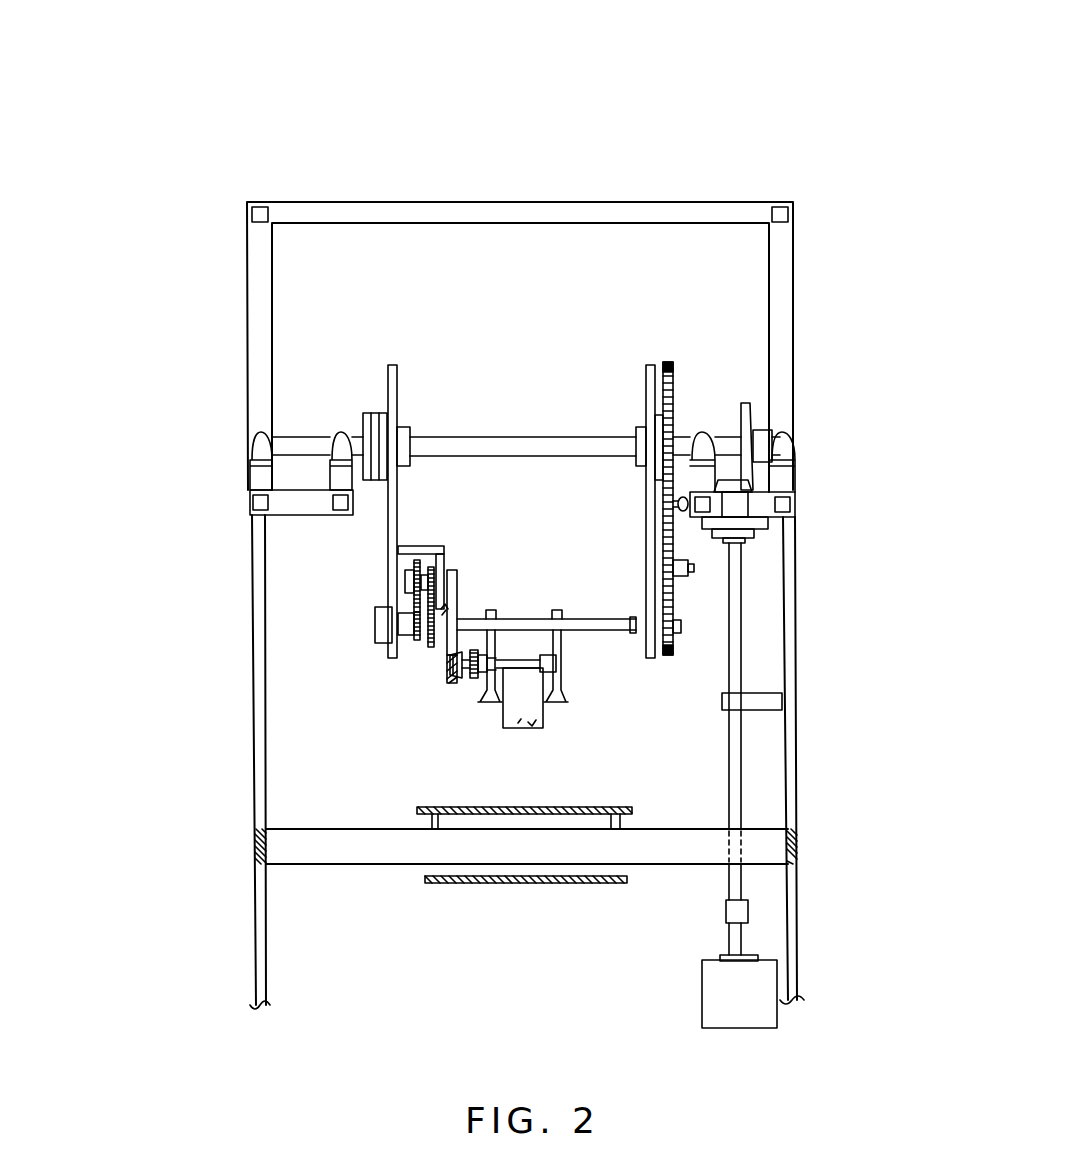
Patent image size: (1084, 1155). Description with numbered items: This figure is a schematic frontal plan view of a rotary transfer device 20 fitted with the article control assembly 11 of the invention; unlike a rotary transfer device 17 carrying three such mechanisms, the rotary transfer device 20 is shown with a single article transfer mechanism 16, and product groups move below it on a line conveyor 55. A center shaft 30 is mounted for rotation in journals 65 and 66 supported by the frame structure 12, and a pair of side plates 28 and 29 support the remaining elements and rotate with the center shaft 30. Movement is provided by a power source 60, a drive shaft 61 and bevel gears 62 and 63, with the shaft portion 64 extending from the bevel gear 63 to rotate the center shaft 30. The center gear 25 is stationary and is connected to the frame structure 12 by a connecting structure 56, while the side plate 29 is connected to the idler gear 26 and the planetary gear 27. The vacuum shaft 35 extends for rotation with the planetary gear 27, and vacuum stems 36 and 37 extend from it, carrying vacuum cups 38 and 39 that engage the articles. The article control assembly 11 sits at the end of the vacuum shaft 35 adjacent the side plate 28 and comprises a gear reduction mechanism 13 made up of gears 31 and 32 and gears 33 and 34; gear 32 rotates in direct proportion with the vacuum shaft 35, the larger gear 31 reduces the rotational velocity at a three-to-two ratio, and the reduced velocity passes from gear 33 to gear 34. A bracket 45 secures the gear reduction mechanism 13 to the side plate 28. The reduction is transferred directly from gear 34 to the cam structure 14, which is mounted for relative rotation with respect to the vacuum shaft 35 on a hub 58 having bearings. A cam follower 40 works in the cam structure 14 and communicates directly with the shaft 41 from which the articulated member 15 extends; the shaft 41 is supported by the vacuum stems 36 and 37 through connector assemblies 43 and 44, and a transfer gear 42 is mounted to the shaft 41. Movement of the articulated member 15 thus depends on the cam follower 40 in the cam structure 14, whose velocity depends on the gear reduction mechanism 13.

The rotary transfer device 20 is at (514, 100).
The frame structure 12 is at (797, 832).
The journal 66 is at (267, 432).
The side plate 28 is at (388, 367).
The center shaft 30 is at (493, 442).
The side plate 29 is at (648, 365).
The rotary transfer device 17 is at (683, 345).
The center gear 25 is at (676, 388).
The journal 65 is at (700, 432).
The shaft portion 64 is at (744, 405).
The bevel gear 63 is at (752, 478).
The bevel gear 62 is at (682, 512).
The connecting structure 56 is at (745, 503).
The idler gear 26 is at (675, 585).
The planetary gear 27 is at (675, 635).
The drive shaft 61 is at (743, 743).
The power source 60 is at (778, 1018).
The gear 31 is at (395, 572).
The bracket 45 is at (425, 547).
The gear 33 is at (432, 568).
The gear reduction mechanism 13 is at (380, 583).
The gear 32 is at (433, 643).
The gear 34 is at (445, 645).
The hub 58 is at (450, 606).
The cam structure 14 is at (452, 660).
The article control assembly 11 is at (430, 694).
The vacuum stem 36 is at (492, 616).
The vacuum shaft 35 is at (525, 619).
The vacuum stem 37 is at (557, 616).
The connector assembly 44 is at (630, 690).
The cam follower 40 is at (463, 680).
The transfer gear 42 is at (473, 675).
The connector assembly 43 is at (483, 690).
The vacuum cup 38 is at (500, 703).
The line conveyor 55 is at (545, 728).
The shaft 41 is at (530, 728).
The article transfer mechanism 16 is at (602, 698).
The vacuum cup 39 is at (560, 702).
The articulated member 15 is at (564, 816).